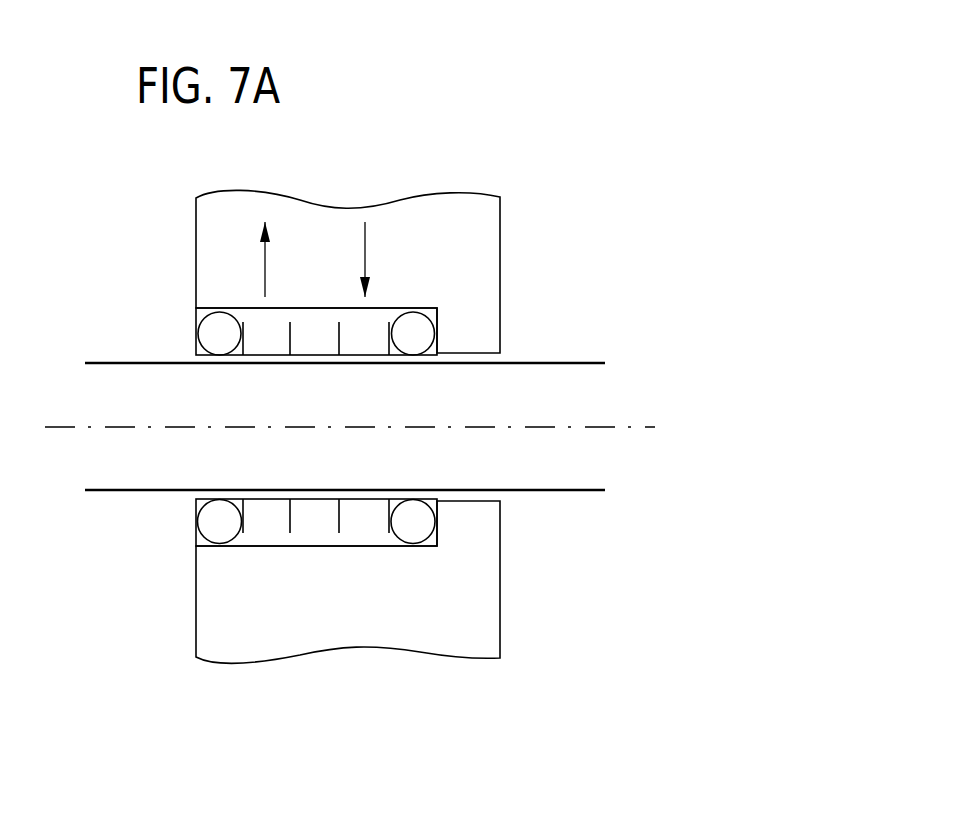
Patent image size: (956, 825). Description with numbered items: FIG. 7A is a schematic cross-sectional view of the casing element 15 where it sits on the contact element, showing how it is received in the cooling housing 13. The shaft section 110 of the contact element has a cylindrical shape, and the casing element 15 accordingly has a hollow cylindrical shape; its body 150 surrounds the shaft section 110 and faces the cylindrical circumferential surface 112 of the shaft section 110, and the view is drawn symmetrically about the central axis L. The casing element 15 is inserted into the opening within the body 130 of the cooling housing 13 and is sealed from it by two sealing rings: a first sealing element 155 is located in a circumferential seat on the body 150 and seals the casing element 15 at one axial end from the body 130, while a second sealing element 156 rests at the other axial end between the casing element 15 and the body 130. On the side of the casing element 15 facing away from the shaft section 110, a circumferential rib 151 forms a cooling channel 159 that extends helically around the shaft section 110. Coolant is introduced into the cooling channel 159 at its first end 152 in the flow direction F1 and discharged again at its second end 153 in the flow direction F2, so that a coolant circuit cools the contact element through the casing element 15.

The cooling housing 13 is at (178, 235).
The casing element 15 is at (187, 316).
The shaft section 110 is at (582, 362).
The cylindrical circumferential surface 112 is at (374, 324).
The body 130 is at (501, 238).
The body 150 is at (268, 427).
The circumferential rib 151 is at (316, 387).
The first end 152 is at (362, 342).
The second end 153 is at (270, 342).
The first sealing element 155 is at (208, 332).
The second sealing element 156 is at (427, 318).
The cooling channel 159 is at (323, 327).
The reference line L is at (627, 428).
The flow direction F1 is at (383, 259).
The flow direction F2 is at (247, 259).